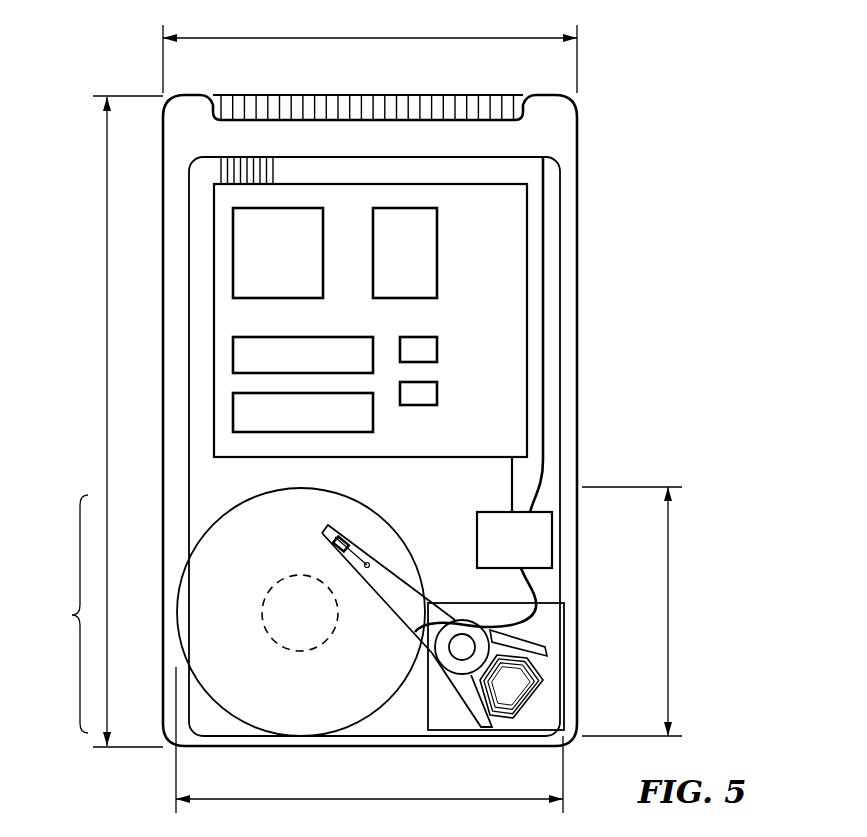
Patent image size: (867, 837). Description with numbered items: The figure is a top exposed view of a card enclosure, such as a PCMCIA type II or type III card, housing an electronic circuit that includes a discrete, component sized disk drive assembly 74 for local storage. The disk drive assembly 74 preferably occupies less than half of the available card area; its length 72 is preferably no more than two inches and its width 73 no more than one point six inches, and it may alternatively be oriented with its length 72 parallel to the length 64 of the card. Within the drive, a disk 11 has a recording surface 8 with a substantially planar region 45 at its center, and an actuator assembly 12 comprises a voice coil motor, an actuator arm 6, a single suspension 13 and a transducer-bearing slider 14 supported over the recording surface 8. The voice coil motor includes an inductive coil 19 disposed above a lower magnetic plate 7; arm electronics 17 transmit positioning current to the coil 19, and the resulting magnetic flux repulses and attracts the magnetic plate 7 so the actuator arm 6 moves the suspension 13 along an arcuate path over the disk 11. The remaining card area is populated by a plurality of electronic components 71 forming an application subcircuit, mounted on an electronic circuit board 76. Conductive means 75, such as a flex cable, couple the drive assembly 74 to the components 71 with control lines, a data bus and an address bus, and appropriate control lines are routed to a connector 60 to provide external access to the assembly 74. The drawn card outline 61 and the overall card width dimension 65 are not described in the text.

The actuator arm 6 is at (460, 690).
The lower magnetic plate 7 is at (553, 632).
The recording surface 8 is at (301, 606).
The disk 11 is at (362, 497).
The actuator assembly 12 is at (430, 692).
The suspension 13 is at (393, 605).
The slider 14 is at (335, 543).
The arm electronics 17 is at (477, 538).
The inductive coil 19 is at (540, 690).
The substantially planar region 45 is at (284, 665).
The connector 60 is at (412, 101).
The housing 61 is at (581, 285).
The length of the card 64 is at (107, 410).
The housing width 65 is at (277, 38).
The electronic components 71 is at (401, 222).
The length 72 is at (328, 799).
The width 73 is at (668, 606).
The disk drive assembly 74 is at (64, 614).
The conductive means 75 is at (512, 490).
The electronic circuit board 76 is at (545, 368).